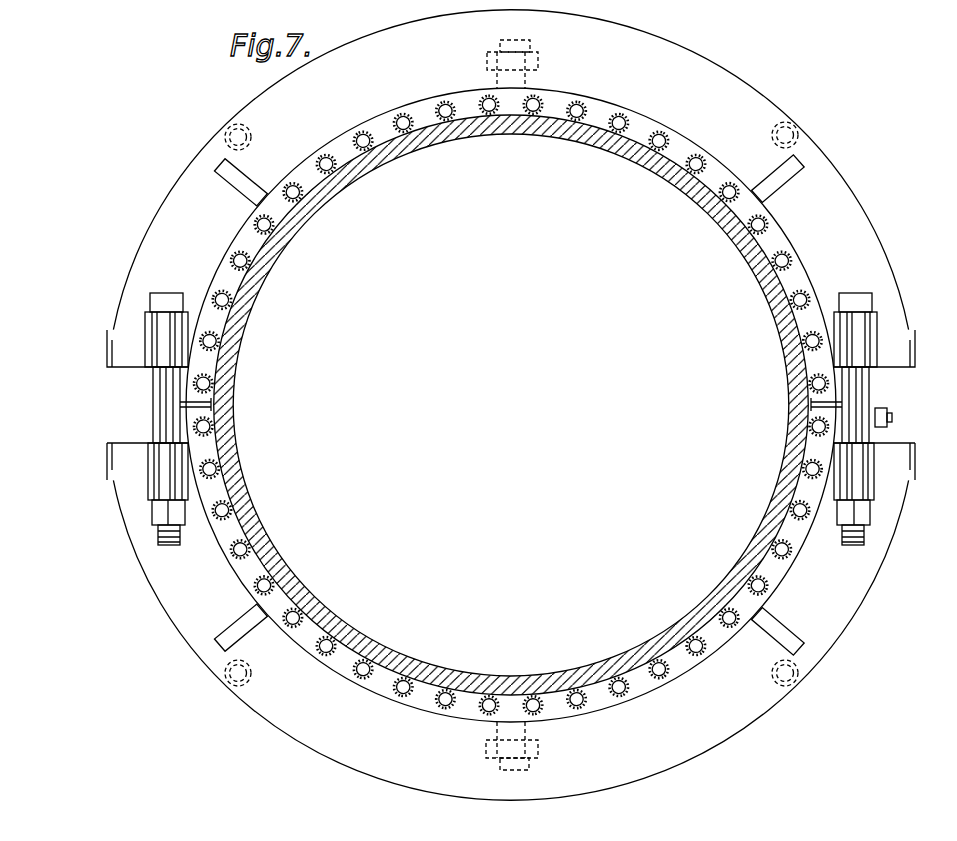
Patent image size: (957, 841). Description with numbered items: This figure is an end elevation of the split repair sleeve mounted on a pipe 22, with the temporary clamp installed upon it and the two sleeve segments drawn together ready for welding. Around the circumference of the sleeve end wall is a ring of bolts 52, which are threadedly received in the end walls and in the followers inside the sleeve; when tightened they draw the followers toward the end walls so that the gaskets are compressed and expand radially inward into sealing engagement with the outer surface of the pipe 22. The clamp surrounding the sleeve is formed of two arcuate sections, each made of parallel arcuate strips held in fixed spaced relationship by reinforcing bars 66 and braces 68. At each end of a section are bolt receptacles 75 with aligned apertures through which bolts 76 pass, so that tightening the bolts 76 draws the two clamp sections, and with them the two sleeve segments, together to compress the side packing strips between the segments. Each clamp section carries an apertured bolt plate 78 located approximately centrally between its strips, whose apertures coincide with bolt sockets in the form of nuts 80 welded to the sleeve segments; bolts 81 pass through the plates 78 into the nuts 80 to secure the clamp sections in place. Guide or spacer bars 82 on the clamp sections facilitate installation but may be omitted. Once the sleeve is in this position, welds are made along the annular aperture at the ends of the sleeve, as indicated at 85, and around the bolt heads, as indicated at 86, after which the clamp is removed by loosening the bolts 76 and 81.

The pipe 22 is at (558, 124).
The bolts 52 is at (634, 118).
The reinforcing bars 66 is at (252, 138).
The braces 68 is at (154, 422).
The bolt receptacles 75 is at (160, 334).
The bolts 76 is at (158, 397).
The apertured bolt plate 78 is at (539, 67).
The nuts 80 is at (496, 83).
The bolts 81 is at (528, 47).
The guide or spacer bars 82 is at (247, 187).
The weld along annular aperture 85 is at (247, 279).
The welds around bolt heads 86 is at (797, 262).